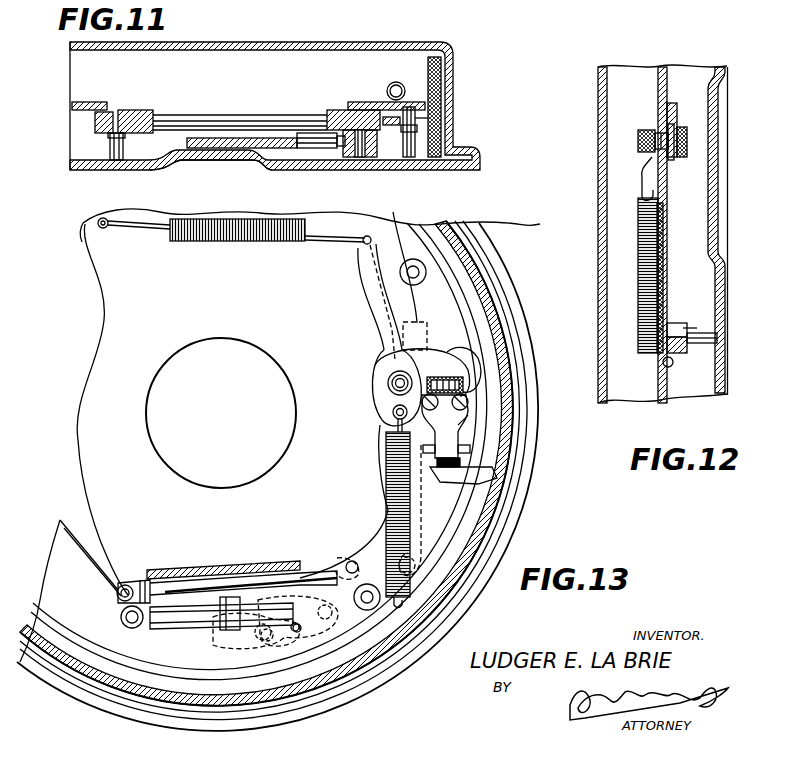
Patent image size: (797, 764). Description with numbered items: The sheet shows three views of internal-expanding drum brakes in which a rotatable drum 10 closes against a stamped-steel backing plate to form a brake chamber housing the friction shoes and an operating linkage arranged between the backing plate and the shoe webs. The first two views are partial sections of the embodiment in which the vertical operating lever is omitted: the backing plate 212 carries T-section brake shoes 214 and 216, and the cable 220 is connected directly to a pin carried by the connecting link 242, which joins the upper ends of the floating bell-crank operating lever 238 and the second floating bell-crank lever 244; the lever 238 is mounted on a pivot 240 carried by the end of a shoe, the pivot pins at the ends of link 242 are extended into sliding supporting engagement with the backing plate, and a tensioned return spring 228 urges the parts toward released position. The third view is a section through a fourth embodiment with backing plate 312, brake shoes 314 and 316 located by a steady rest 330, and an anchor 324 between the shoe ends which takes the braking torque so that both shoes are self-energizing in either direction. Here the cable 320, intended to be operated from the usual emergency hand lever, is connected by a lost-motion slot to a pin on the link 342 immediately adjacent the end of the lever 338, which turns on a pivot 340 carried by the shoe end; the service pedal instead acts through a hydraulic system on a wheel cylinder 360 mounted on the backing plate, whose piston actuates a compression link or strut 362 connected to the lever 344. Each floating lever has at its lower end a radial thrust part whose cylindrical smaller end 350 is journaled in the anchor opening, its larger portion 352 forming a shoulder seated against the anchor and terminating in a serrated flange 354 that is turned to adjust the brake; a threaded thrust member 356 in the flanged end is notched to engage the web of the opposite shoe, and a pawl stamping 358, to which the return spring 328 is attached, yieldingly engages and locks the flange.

In FIG. 11, the rotatable drum 10 is at (407, 42).
In FIG. 12, the rotatable drum 10 is at (598, 190).
In FIG. 13, the rotatable drum 10 is at (503, 467).
In FIG. 11, the backing plate 212 is at (427, 164).
In FIG. 12, the backing plate 212 is at (708, 135).
In FIG. 12, the brake shoe 214 is at (665, 80).
In FIG. 11, the brake shoe 216 is at (90, 102).
In FIG. 12, the brake shoe 216 is at (667, 377).
In FIG. 11, the cable 220 is at (262, 133).
In FIG. 11, the return spring 228 is at (390, 83).
In FIG. 12, the return spring 228 is at (643, 243).
In FIG. 11, the floating bell-crank operating lever 238 is at (420, 118).
In FIG. 12, the floating bell-crank operating lever 238 is at (677, 207).
In FIG. 12, the pivot 240 is at (640, 142).
In FIG. 11, the connecting link 242 is at (170, 117).
In FIG. 12, the connecting link 242 is at (687, 327).
In FIG. 11, the floating bell-crank lever 244 is at (95, 123).
In FIG. 13, the backing plate 312 is at (163, 477).
In FIG. 13, the brake shoe 314 is at (447, 302).
In FIG. 13, the brake shoe 316 is at (327, 640).
In FIG. 13, the cable 320 is at (173, 570).
In FIG. 13, the anchor 324 is at (463, 385).
In FIG. 13, the return spring 328 is at (387, 482).
In FIG. 13, the steady rest 330 is at (423, 270).
In FIG. 13, the floating bell-crank operating lever 338 is at (387, 427).
In FIG. 13, the pivot 340 is at (393, 383).
In FIG. 13, the link 342 is at (220, 577).
In FIG. 13, the lever 344 is at (87, 542).
In FIG. 13, the cylindrical smaller end 350 is at (470, 358).
In FIG. 13, the larger portion 352 is at (467, 415).
In FIG. 13, the serrated flange 354 is at (470, 448).
In FIG. 13, the threaded thrust member 356 is at (470, 480).
In FIG. 13, the pawl stamping 358 is at (443, 435).
In FIG. 13, the wheel cylinder 360 is at (257, 603).
In FIG. 13, the compression link or strut 362 is at (207, 617).